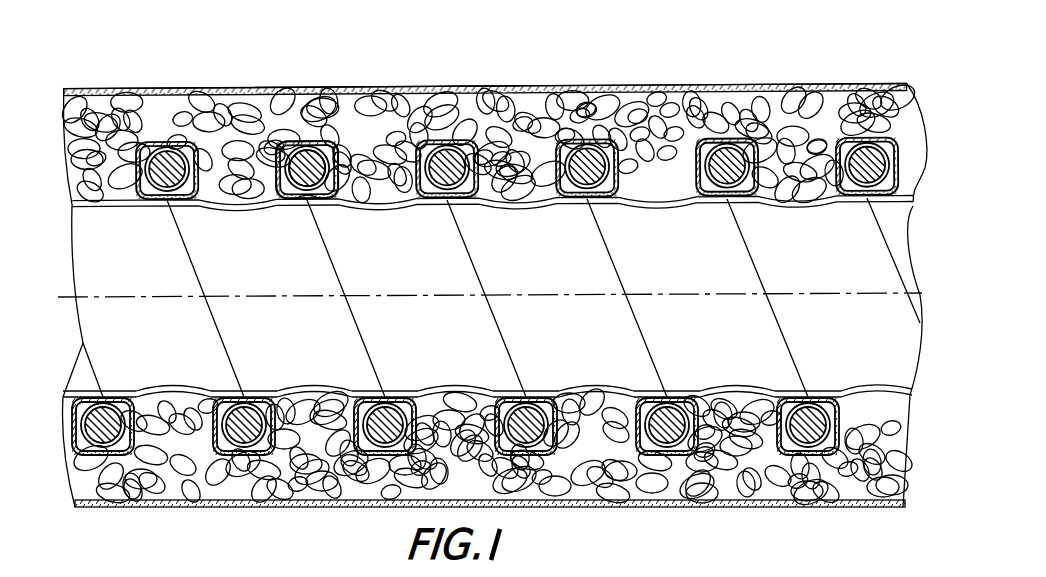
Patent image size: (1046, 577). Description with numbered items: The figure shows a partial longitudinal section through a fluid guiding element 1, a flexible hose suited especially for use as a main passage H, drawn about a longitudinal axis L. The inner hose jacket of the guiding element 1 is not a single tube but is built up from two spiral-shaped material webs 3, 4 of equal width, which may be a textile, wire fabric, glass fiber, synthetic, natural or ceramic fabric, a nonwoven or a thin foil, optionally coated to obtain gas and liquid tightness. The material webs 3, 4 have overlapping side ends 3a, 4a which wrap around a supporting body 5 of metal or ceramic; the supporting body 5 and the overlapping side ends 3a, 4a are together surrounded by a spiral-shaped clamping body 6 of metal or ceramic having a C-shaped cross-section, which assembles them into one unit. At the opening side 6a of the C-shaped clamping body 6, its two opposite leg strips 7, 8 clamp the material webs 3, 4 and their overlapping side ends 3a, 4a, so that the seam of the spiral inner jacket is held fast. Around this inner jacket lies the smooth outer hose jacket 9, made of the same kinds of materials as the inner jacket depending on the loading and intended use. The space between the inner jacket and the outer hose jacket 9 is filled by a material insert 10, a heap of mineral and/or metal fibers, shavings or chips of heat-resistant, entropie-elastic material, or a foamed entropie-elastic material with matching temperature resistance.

The fluid guiding element 1 is at (137, 75).
The material insert 10 is at (230, 137).
The supporting body 5 is at (303, 163).
The clamping body 6 is at (343, 117).
The opening side 6a is at (303, 208).
The leg strip 7 is at (268, 207).
The leg strip 8 is at (317, 202).
The outer hose jacket 9 is at (585, 87).
The material web 3 is at (450, 360).
The material web 4 is at (580, 360).
The overlapping side end 3a is at (460, 282).
The overlapping side end 4a is at (488, 282).
The main passage H is at (483, 80).
The longitudinal axis L is at (703, 290).